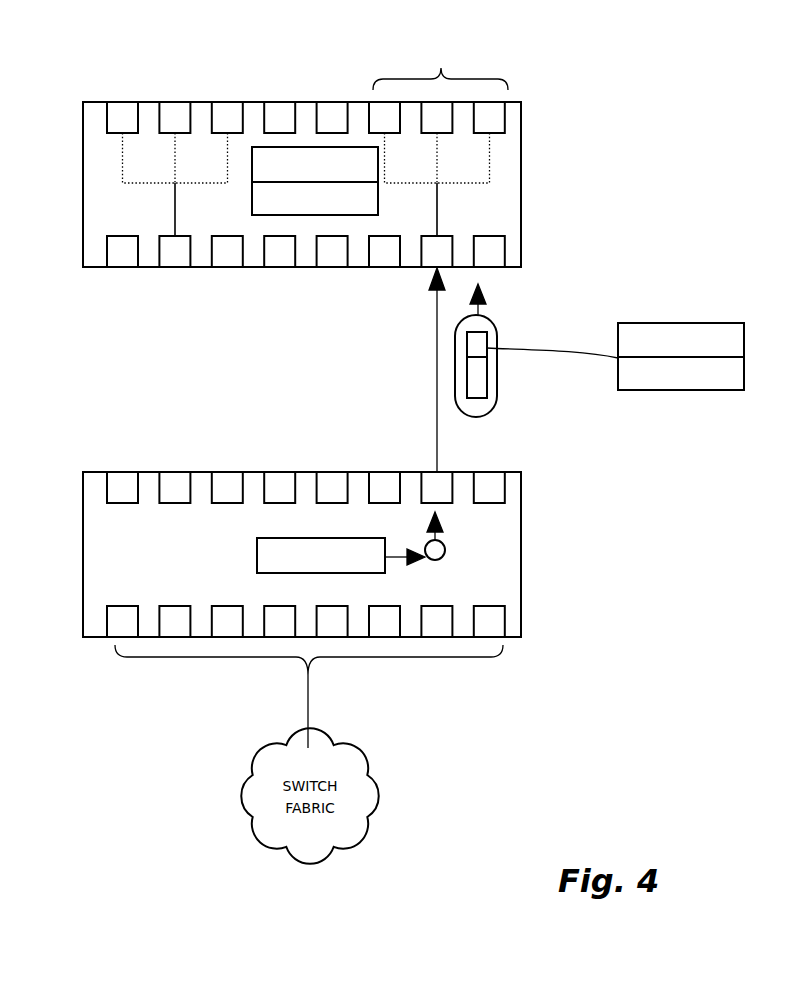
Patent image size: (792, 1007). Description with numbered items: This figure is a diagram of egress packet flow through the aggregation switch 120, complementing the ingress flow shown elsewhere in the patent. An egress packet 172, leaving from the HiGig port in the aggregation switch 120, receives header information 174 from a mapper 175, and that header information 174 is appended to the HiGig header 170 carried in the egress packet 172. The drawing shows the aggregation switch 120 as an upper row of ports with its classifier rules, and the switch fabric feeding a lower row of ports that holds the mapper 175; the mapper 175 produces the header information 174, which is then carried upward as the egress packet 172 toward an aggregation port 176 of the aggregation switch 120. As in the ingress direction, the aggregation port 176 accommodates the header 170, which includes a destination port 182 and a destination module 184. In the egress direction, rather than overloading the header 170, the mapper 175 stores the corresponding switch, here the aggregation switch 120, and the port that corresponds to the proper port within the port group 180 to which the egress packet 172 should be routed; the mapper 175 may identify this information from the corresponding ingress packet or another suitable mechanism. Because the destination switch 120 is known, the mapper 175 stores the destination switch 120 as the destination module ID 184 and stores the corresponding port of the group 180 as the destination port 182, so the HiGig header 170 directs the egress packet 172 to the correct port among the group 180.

The aggregation switch 120 is at (521, 183).
The port group 180 is at (441, 72).
The aggregation port 176 is at (432, 275).
The HiGig header 170 is at (490, 335).
The egress packet 172 is at (490, 313).
The destination port 182 is at (710, 323).
The destination module ID 184 is at (710, 390).
The mapper 175 is at (257, 562).
The header information 174 is at (445, 550).